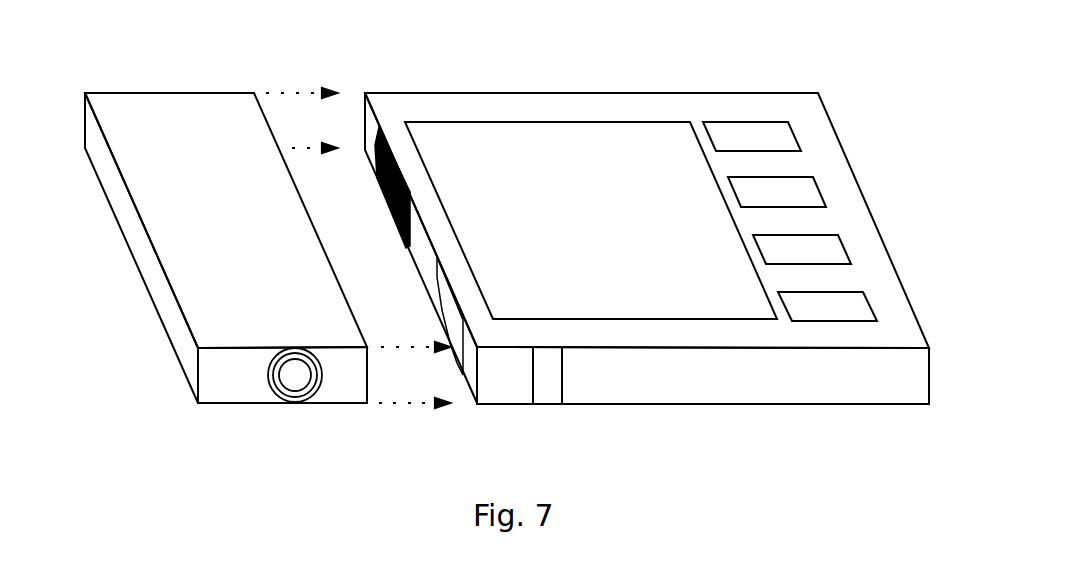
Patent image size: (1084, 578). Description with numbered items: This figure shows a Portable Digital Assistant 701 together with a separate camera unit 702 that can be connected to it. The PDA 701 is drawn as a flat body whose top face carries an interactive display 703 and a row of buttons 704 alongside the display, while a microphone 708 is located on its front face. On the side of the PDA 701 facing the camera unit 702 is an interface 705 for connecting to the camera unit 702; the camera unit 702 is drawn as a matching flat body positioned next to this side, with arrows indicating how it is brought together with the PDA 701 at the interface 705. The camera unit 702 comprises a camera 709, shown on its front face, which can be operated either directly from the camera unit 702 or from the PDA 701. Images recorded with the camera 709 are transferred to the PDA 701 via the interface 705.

The Portable Digital Assistant 701 is at (637, 253).
The camera unit 702 is at (142, 93).
The interactive display 703 is at (610, 190).
The buttons 704 is at (777, 122).
The interface 705 is at (393, 227).
The microphone 708 is at (552, 404).
The camera 709 is at (295, 375).